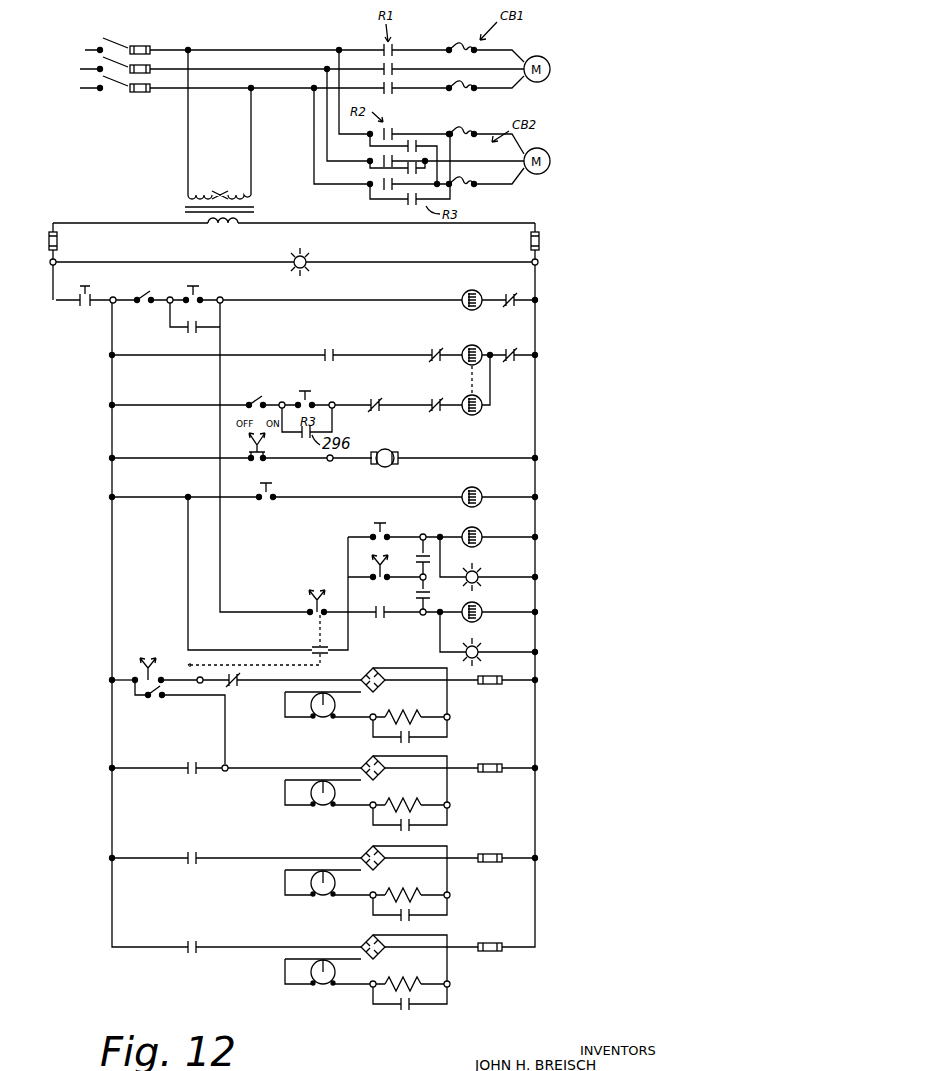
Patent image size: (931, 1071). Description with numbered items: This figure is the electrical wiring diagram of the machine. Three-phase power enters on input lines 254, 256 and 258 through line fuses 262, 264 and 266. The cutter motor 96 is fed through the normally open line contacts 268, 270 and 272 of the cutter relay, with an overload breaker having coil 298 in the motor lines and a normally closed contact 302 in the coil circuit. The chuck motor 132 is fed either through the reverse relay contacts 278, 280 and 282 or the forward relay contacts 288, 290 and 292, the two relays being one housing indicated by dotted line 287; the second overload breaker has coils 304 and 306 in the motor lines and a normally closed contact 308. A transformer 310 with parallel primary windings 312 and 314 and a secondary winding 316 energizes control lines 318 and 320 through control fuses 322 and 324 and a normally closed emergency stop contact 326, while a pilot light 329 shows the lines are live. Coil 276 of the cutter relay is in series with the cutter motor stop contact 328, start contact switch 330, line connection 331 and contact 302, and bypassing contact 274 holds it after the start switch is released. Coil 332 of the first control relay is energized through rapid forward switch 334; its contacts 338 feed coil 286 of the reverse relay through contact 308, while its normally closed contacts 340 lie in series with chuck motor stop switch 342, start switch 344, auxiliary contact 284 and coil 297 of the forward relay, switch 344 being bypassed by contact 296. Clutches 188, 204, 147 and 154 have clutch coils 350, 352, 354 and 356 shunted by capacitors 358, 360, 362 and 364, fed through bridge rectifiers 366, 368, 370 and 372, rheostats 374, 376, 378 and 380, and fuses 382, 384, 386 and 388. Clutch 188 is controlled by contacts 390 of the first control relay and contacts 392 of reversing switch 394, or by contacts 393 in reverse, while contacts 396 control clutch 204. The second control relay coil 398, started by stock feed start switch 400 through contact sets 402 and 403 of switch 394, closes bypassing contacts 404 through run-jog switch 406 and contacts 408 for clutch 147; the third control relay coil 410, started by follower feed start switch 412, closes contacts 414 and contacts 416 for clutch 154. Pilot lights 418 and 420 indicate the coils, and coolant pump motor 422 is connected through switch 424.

The input line 254 is at (94, 32).
The input line 256 is at (80, 66).
The input line 258 is at (85, 88).
The line fuse 262 is at (142, 45).
The line fuse 264 is at (152, 64).
The line fuse 266 is at (142, 92).
The line contact 268 is at (396, 46).
The line contact 270 is at (396, 68).
The line contact 272 is at (396, 92).
The switch bypassing contact 296 is at (485, 50).
The coil 298 is at (492, 92).
The cutter motor 96 is at (562, 66).
The contact 278 is at (396, 133).
The contact 280 is at (382, 158).
The contact 282 is at (374, 182).
The contact 288 is at (436, 144).
The contact 290 is at (436, 169).
The contact 292 is at (402, 204).
The coil 304 is at (480, 116).
The coil 306 is at (480, 193).
The chuck motor 132 is at (555, 160).
The transformer 310 is at (175, 221).
The primary winding 312 is at (188, 195).
The primary winding 314 is at (251, 195).
The secondary winding 316 is at (222, 230).
The control fuse 322 is at (59, 241).
The control fuse 324 is at (542, 237).
The pilot light 329 is at (312, 262).
The emergency stop contact 326 is at (91, 293).
The cutter motor stop contact 328 is at (152, 296).
The cutter motor start contact switch 330 is at (206, 292).
The line connection 331 is at (330, 300).
The coil 276 is at (490, 288).
The normally closed contact 302 is at (520, 304).
The switch bypassing contact 274 is at (181, 332).
The control line 318 is at (110, 380).
The control line 320 is at (536, 339).
The normally open contacts 338 is at (324, 340).
The dotted line 287 is at (460, 371).
The coil 286 is at (492, 336).
The normally closed contact 308 is at (520, 372).
The chuck motor stop contact switch 342 is at (252, 399).
The chuck motor start switch 344 is at (315, 394).
The normally closed contacts 340 is at (374, 412).
The auxiliary contact 284 is at (438, 412).
The coil 297 is at (480, 408).
The switch 424 is at (264, 462).
The coolant pump motor 422 is at (384, 468).
The rapid forward contact switch 334 is at (266, 500).
The solenoid coil 332 is at (481, 496).
The set of contacts 403 is at (324, 654).
The stock feed start switch 400 is at (378, 524).
The coil 398 is at (481, 536).
The bypassing contacts 404 is at (416, 554).
The normally open contacts 414 is at (416, 598).
The run-jog switch 406 is at (370, 565).
The pilot light 418 is at (481, 572).
The set of contacts 402 is at (308, 603).
The follower feed start switch 412 is at (362, 608).
The coil 410 is at (479, 624).
The pilot light 420 is at (479, 658).
The reversing switch 394 is at (142, 661).
The contacts 392 is at (164, 686).
The contacts 393 is at (156, 703).
The normally closed contacts 390 is at (236, 688).
The bridge rectifier 366 is at (370, 692).
The clutch 188 is at (438, 708).
The current controlling rheostat 374 is at (324, 719).
The clutch coil 350 is at (414, 719).
The capacitor 358 is at (412, 739).
The fuse 382 is at (488, 686).
The normally open contacts 396 is at (192, 776).
The bridge rectifier 368 is at (370, 782).
The clutch 204 is at (438, 793).
The current controlling rheostat 376 is at (324, 811).
The clutch coil 352 is at (414, 809).
The capacitor 360 is at (412, 829).
The fuse 384 is at (488, 776).
The contacts 408 is at (196, 868).
The bridge rectifier 370 is at (370, 872).
The stock feed clutch 147 is at (438, 882).
The current controlling rheostat 378 is at (324, 899).
The clutch coil 354 is at (414, 897).
The capacitor 362 is at (412, 919).
The fuse 386 is at (488, 868).
The normally open contacts 416 is at (196, 955).
The bridge rectifier 372 is at (370, 961).
The clutch 154 is at (438, 970).
The current controlling rheostat 380 is at (324, 987).
The clutch coil 356 is at (414, 986).
The capacitor 364 is at (412, 1013).
The fuse 388 is at (488, 954).